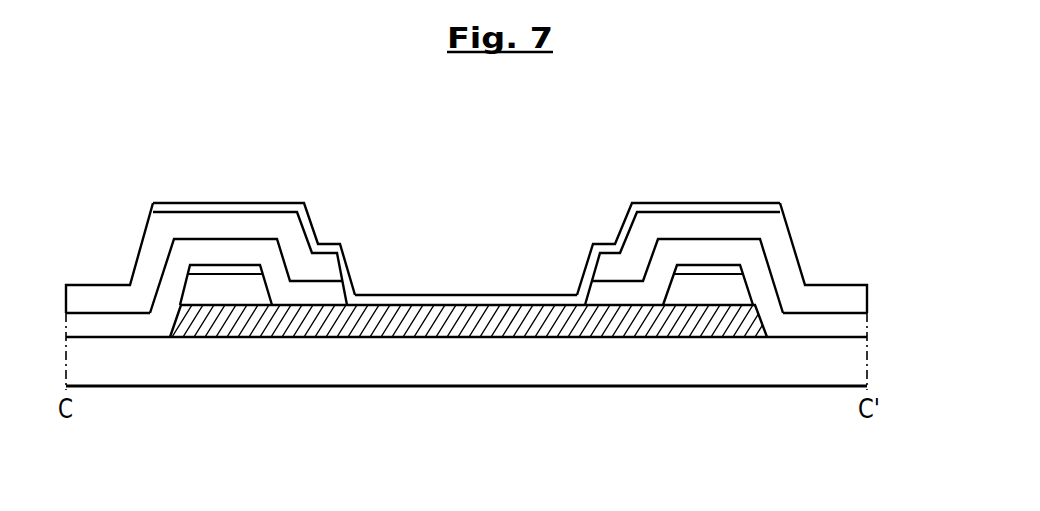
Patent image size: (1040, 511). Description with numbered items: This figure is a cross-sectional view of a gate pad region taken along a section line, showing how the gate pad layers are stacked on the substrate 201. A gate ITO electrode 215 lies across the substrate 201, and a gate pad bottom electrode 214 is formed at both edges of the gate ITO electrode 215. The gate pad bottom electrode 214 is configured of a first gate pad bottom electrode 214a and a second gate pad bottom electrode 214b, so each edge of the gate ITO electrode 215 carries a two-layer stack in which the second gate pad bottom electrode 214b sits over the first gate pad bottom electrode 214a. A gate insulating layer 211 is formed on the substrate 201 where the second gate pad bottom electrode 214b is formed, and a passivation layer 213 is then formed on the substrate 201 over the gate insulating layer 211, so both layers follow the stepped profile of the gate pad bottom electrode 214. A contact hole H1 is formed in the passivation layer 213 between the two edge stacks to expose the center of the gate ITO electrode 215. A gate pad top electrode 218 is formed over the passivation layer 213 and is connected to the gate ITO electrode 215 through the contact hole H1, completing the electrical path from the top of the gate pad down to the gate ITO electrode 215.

The substrate 201 is at (867, 365).
The gate insulating layer 211 is at (867, 325).
The passivation layer 213 is at (867, 295).
The gate pad bottom electrode 214 is at (459, 374).
The first gate pad bottom electrode 214a is at (207, 293).
The second gate pad bottom electrode 214b is at (252, 268).
The gate ITO electrode 215 is at (355, 330).
The gate pad top electrode 218 is at (252, 207).
The contact hole H1 is at (467, 238).